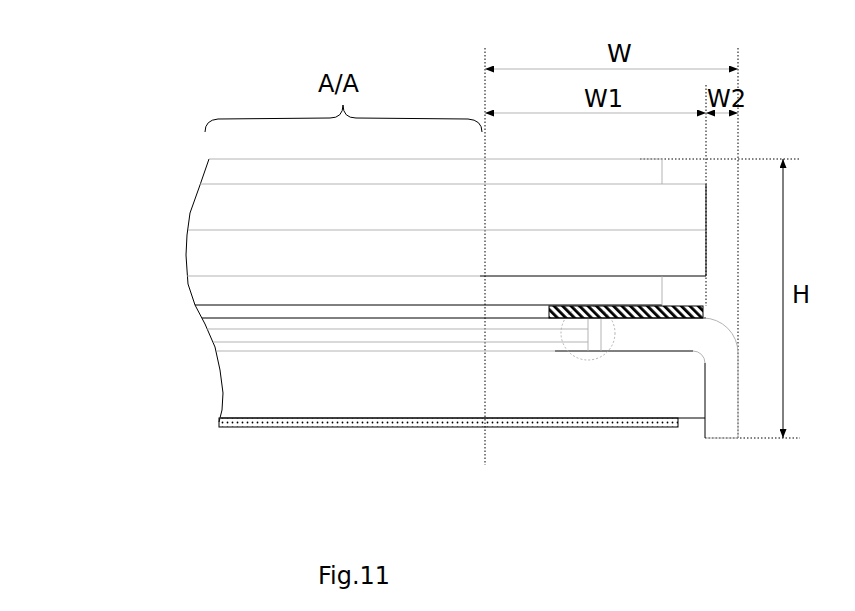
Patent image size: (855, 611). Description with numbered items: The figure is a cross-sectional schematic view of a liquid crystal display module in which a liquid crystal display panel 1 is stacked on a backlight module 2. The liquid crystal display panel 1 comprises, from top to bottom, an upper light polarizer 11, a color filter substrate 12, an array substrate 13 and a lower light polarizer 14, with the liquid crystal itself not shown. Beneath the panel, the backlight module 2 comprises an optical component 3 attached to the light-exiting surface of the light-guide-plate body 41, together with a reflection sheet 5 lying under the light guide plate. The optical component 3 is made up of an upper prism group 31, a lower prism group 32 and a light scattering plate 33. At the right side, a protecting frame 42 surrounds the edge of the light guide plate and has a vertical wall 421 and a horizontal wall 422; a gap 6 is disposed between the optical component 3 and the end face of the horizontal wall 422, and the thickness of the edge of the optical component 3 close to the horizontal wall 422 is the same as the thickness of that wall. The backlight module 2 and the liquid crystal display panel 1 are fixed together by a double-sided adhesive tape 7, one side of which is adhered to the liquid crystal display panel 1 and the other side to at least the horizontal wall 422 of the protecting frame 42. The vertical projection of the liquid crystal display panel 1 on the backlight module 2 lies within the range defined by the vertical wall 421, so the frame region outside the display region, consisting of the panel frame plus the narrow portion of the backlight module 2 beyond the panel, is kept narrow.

The liquid crystal display panel 1 is at (82, 163).
The upper light polarizer 11 is at (212, 168).
The color filter substrate 12 is at (205, 213).
The array substrate 13 is at (205, 255).
The lower light polarizer 14 is at (205, 284).
The backlight module 2 is at (82, 315).
The optical component 3 is at (132, 311).
The upper prism group 31 is at (212, 324).
The lower prism group 32 is at (218, 333).
The light scattering plate 33 is at (222, 347).
The light-guide-plate body 41 is at (228, 393).
The reflection sheet 5 is at (228, 423).
The gap 6 is at (593, 361).
The double-sided adhesive tape 7 is at (628, 313).
The protecting frame 42 is at (733, 335).
The vertical wall 421 is at (720, 383).
The horizontal wall 422 is at (668, 338).